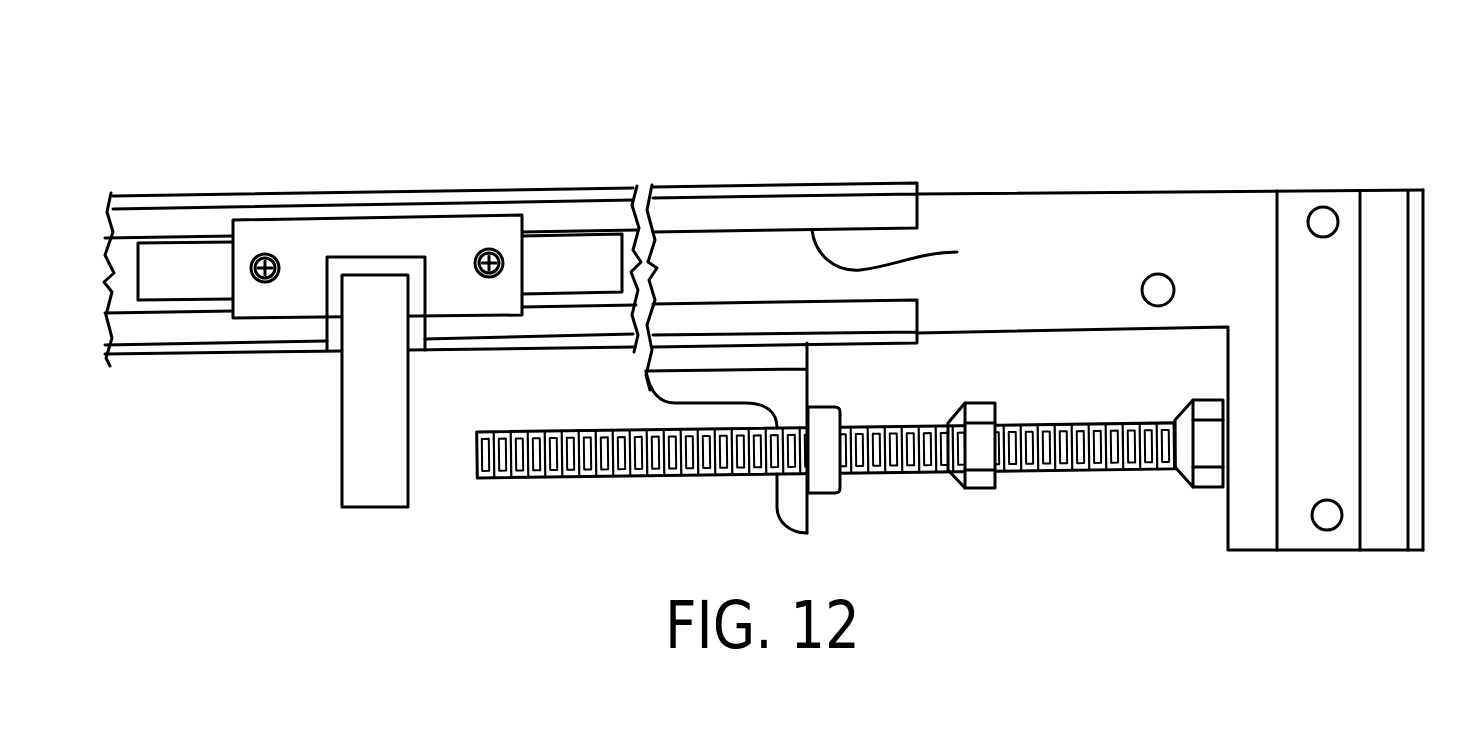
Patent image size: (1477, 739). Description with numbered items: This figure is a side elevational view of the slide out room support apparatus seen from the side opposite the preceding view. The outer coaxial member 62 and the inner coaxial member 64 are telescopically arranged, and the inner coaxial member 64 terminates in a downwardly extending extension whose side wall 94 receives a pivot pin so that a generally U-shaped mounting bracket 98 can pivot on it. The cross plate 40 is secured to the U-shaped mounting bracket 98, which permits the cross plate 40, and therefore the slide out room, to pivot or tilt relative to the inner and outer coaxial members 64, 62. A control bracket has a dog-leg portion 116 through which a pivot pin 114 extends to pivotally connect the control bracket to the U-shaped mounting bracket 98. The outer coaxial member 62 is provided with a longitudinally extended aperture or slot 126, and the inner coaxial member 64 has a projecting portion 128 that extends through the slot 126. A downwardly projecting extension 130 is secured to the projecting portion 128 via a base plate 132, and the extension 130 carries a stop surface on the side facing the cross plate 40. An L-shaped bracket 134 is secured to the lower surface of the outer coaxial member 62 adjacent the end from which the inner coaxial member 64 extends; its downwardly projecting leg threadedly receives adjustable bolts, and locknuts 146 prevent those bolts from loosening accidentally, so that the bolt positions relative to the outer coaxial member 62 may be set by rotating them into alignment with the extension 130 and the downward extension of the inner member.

The cross plate 40 is at (1417, 535).
The outer coaxial member 62 is at (900, 183).
The inner coaxial member 64 is at (1048, 215).
The side wall 94 is at (1253, 517).
The U-shaped mounting bracket 98 is at (1347, 270).
The pivot pin 114 is at (1322, 223).
The dog-leg portion 116 is at (1330, 517).
The longitudinally extended aperture or slot 126 is at (921, 249).
The projecting portion 128 is at (572, 260).
The downwardly projecting extension 130 is at (360, 420).
The base plate 132 is at (452, 247).
The L-shaped bracket 134 is at (405, 257).
The locknut 146 is at (822, 457).